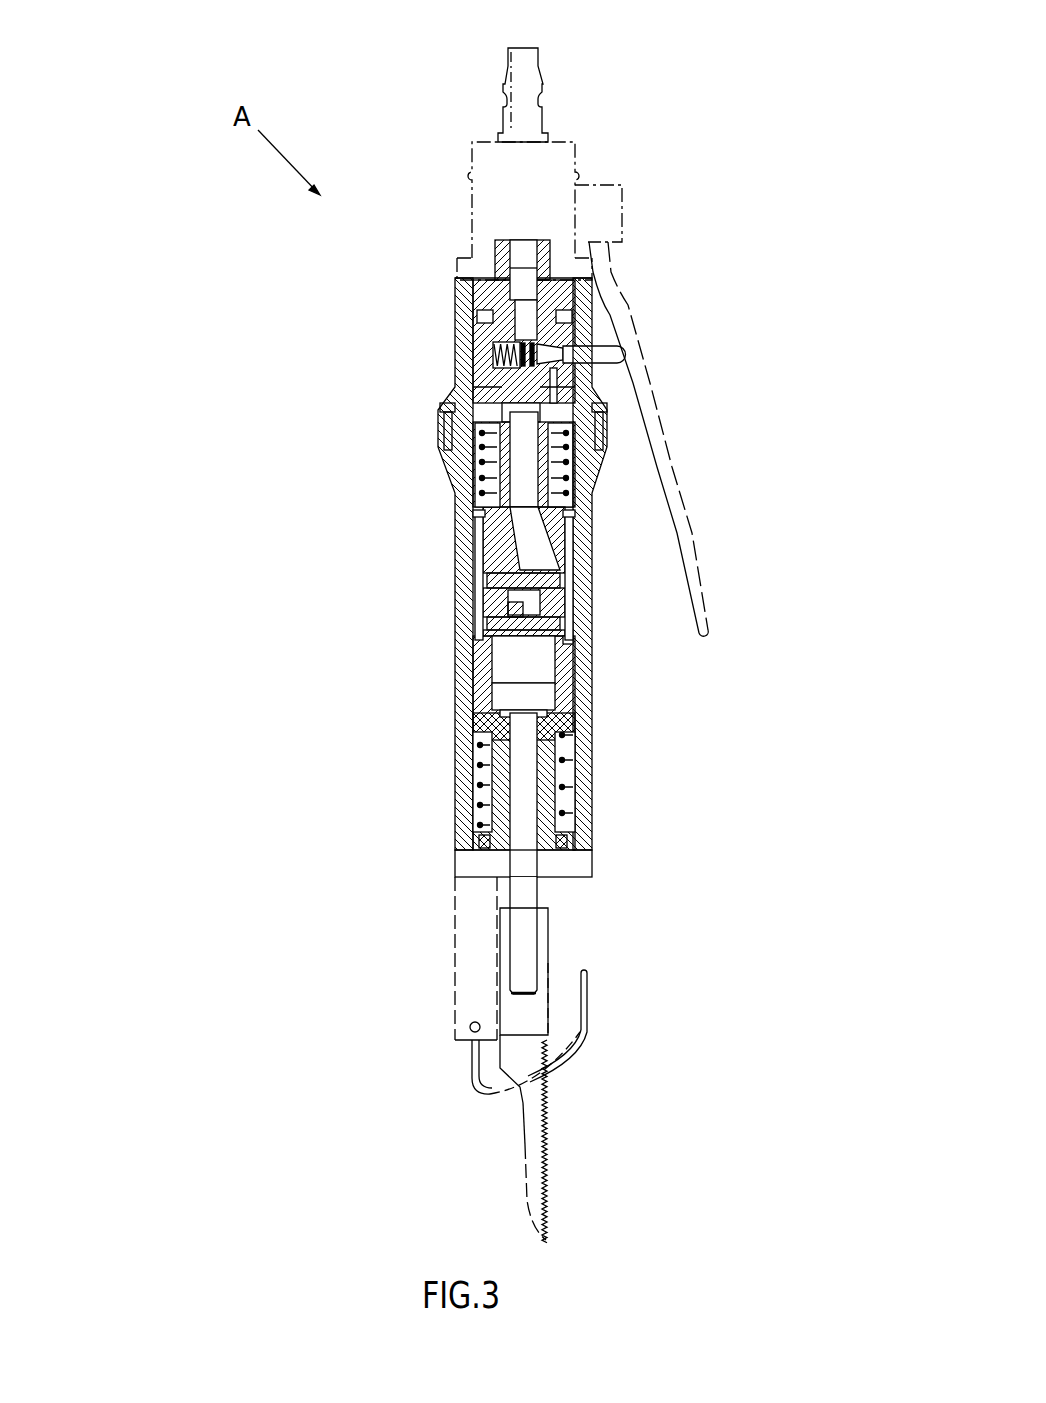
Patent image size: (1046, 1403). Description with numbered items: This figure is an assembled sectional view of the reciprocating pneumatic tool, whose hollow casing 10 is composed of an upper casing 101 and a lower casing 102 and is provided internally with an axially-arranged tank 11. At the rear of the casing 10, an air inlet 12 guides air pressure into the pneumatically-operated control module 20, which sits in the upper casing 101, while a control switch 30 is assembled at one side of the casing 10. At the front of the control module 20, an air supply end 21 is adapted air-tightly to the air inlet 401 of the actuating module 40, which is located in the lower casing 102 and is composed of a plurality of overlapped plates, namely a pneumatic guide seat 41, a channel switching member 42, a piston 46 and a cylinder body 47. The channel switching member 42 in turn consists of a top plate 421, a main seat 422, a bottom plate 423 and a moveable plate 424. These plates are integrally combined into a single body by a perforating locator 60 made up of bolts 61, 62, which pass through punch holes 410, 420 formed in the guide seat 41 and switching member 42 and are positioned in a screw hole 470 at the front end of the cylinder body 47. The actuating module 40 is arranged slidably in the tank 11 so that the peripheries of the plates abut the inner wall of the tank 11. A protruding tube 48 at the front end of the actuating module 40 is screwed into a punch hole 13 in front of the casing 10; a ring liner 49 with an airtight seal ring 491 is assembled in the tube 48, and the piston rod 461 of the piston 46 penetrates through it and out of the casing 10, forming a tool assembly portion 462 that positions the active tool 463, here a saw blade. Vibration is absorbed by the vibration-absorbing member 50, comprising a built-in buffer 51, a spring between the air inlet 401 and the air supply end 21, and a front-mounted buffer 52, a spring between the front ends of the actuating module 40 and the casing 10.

The air inlet 12 is at (515, 48).
The casing 10 is at (456, 296).
The upper casing 101 is at (454, 336).
The lower casing 102 is at (440, 450).
The tank 11 is at (567, 495).
The pneumatically-operated control module 20 is at (595, 378).
The air supply end 21 is at (578, 460).
The air inlet 401 is at (560, 477).
The control switch 30 is at (682, 517).
The actuating module 40 is at (436, 564).
The punch hole 410 is at (476, 510).
The pneumatic guide seat 41 is at (485, 540).
The channel switching member 42 is at (442, 612).
The top plate 421 is at (486, 580).
The main seat 422 is at (490, 607).
The bottom plate 423 is at (500, 622).
The moveable plate 424 is at (495, 648).
The cylinder body 47 is at (457, 688).
The screw hole 470 is at (572, 637).
The punch hole 420 is at (560, 672).
The piston 46 is at (575, 700).
The protruding tube 48 is at (560, 805).
The ring liner 49 is at (486, 785).
The airtight seal ring 491 is at (484, 805).
The vibration-absorbing member 50 is at (326, 627).
The built-in buffer 51 is at (476, 460).
The front-mounted buffer 52 is at (367, 768).
The perforating locator 60 is at (577, 575).
The bolt 61 is at (567, 556).
The bolt 62 is at (572, 617).
The punch hole 13 is at (497, 852).
The piston rod 461 is at (540, 897).
The tool assembly portion 462 is at (537, 957).
The active tool 463 is at (551, 1144).